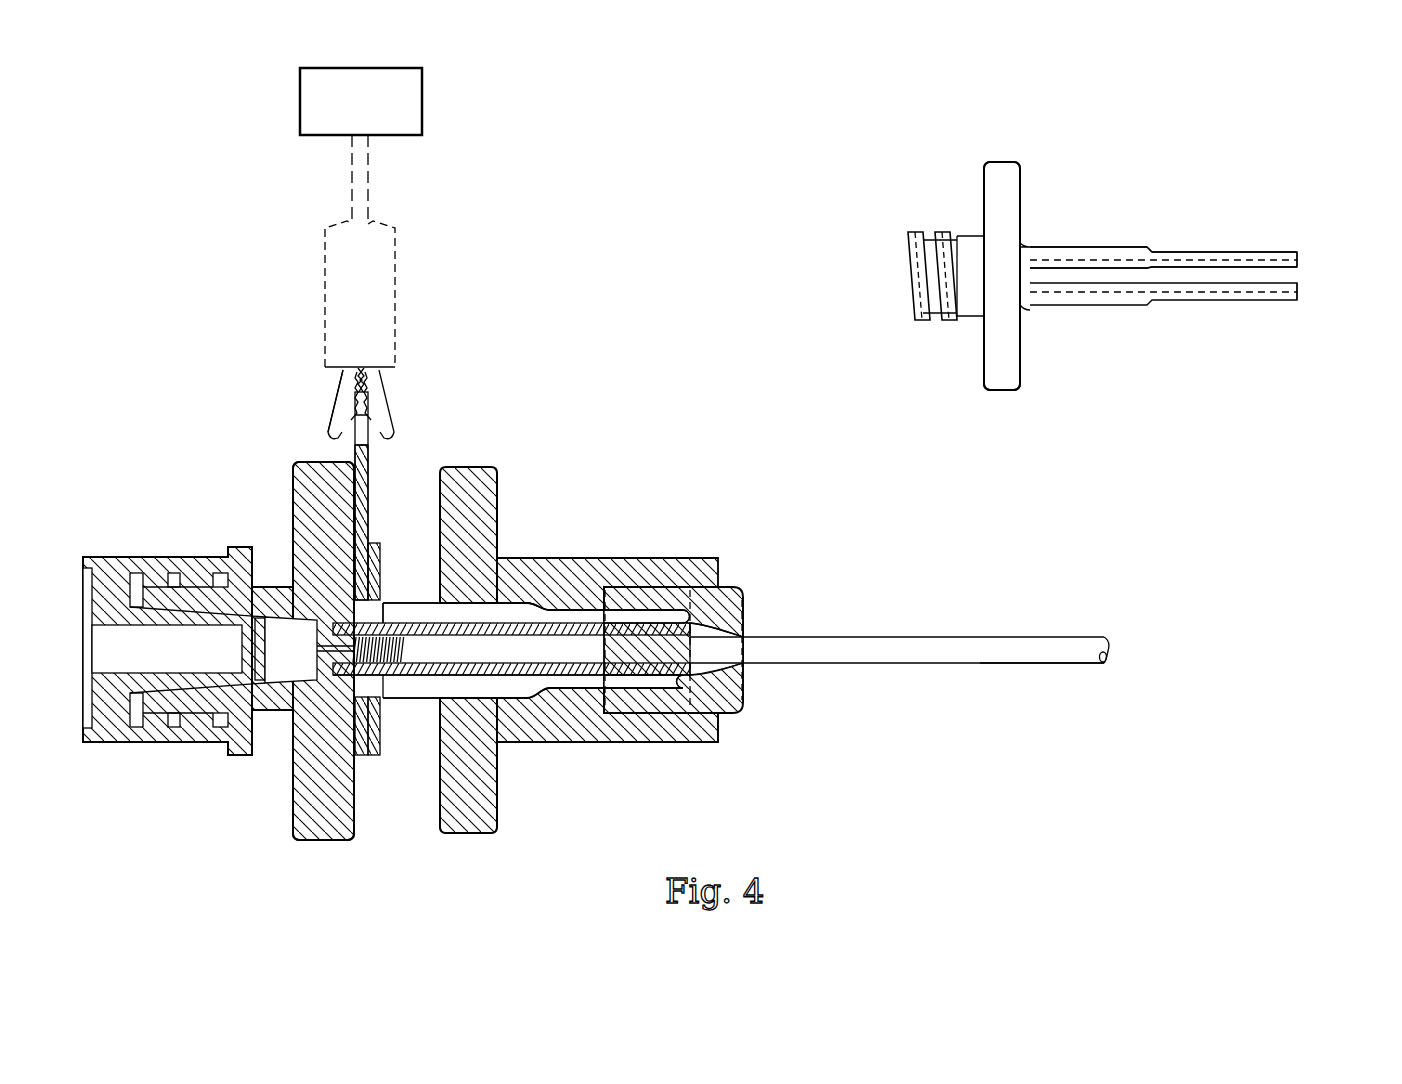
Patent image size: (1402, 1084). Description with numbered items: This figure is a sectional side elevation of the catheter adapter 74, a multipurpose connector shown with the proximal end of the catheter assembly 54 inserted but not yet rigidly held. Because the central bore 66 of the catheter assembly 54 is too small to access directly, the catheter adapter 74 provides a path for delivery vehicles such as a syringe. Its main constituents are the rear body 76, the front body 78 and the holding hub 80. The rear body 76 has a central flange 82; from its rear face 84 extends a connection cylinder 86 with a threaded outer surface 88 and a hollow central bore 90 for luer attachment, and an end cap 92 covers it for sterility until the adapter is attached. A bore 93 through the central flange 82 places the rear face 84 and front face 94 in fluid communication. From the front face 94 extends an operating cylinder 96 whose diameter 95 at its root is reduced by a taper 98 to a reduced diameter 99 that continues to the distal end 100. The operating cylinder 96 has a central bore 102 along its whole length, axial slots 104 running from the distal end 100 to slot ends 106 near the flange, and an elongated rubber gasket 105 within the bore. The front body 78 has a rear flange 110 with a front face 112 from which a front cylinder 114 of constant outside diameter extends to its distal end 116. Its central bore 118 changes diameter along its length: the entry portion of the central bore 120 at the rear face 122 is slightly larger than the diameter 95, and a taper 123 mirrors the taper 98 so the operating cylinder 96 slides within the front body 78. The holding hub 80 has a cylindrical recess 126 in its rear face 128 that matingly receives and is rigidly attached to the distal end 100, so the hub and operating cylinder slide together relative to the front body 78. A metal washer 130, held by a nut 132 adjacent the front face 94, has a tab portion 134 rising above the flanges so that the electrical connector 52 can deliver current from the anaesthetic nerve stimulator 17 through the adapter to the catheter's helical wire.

The anaesthetic nerve stimulator 17 is at (422, 100).
The electrical connector 52 is at (397, 288).
The catheter assembly 54 is at (993, 666).
The central bore 66 is at (872, 648).
The catheter adapter 74 is at (457, 876).
The rear body 76 is at (291, 867).
The front body 78 is at (470, 856).
The holding hub 80 is at (720, 713).
The central flange 82 is at (321, 840).
The rear face 84 is at (292, 801).
The connection cylinder 86 is at (153, 584).
The threaded outer surface 88 is at (168, 741).
The hollow central bore 90 is at (196, 651).
The end cap 92 is at (84, 653).
The bore 93 is at (283, 663).
The front face 94 is at (357, 826).
The diameter 95 is at (380, 701).
The operating cylinder 96 is at (401, 611).
The taper 98 is at (552, 602).
The reduced diameter 99 is at (648, 588).
The distal end 100 is at (660, 617).
The central bore 102 is at (489, 663).
The axial slots 104 is at (490, 604).
The elongated rubber gasket 105 is at (598, 716).
The slot ends 106 is at (399, 601).
The rear flange 110 is at (482, 468).
The front face 112 is at (497, 488).
The front cylinder 114 is at (676, 558).
The distal end 116 is at (718, 572).
The central bore 118 is at (713, 709).
The central bore 120 is at (429, 713).
The rear face 122 is at (440, 484).
The taper 123 is at (575, 679).
The cylindrical recess 126 is at (743, 598).
The rear face 128 is at (640, 739).
The metal washer 130 is at (372, 464).
The nut 132 is at (372, 757).
The tab portion 134 is at (350, 408).